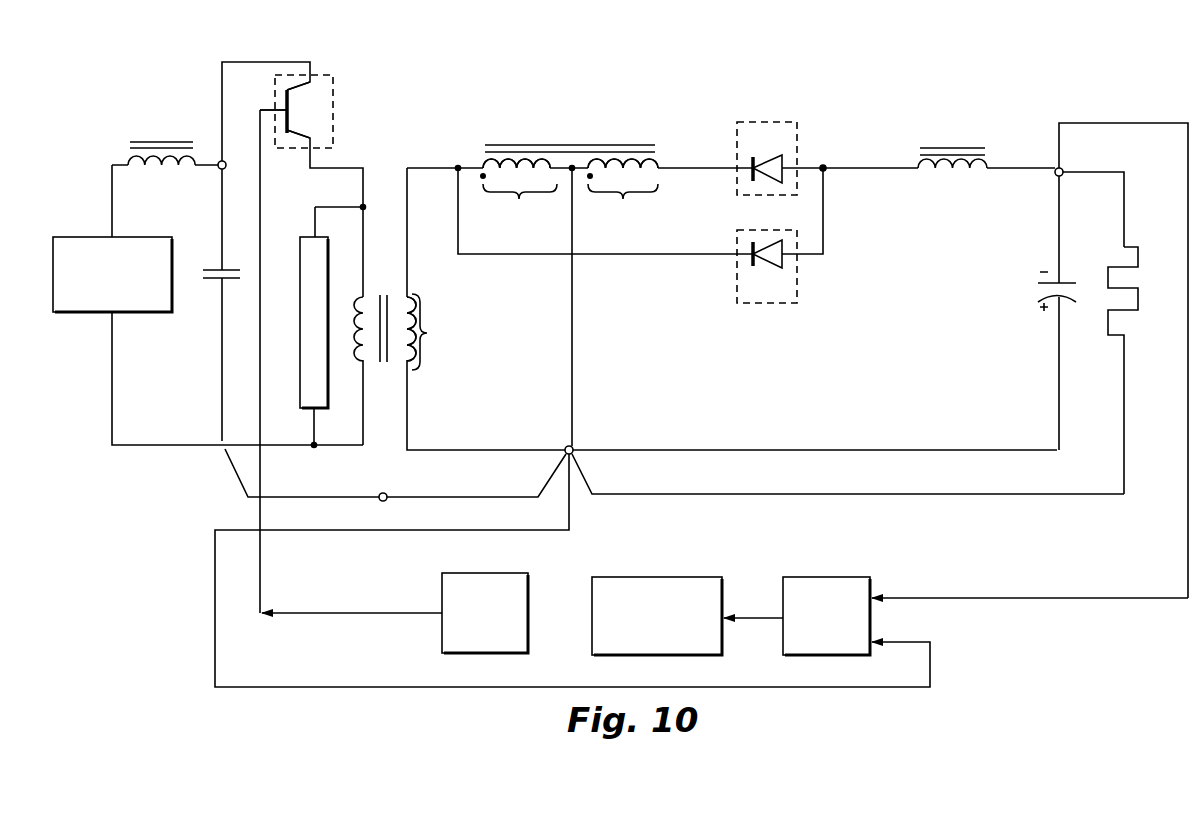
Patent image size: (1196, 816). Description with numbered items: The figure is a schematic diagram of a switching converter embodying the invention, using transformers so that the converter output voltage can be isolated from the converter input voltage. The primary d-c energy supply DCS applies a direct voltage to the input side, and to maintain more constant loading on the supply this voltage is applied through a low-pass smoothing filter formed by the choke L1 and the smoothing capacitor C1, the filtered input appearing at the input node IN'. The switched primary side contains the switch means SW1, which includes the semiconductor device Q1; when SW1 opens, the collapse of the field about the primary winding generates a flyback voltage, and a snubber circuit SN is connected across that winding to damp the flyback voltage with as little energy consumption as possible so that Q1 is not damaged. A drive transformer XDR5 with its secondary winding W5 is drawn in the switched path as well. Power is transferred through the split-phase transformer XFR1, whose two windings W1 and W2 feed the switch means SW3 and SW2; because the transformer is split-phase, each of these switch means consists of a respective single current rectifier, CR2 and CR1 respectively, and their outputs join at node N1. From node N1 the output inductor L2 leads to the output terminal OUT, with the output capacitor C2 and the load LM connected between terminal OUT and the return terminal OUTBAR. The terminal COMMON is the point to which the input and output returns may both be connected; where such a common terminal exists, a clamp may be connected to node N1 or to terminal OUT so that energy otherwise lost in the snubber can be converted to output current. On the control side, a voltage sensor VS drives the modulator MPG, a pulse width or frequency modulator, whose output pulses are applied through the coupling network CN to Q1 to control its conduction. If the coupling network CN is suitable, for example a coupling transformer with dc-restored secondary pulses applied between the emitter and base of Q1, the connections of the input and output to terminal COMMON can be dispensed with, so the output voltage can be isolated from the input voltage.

The choke L1 is at (161, 143).
The input node IN' is at (208, 177).
The switch means SW1 is at (325, 75).
The semiconductor device Q1 is at (288, 110).
The drive transformer XDR5 is at (363, 161).
The secondary winding of XDR5 W5 is at (432, 332).
The split-phase transformer XFR1 is at (557, 139).
The first winding W1 is at (519, 191).
The second winding W2 is at (623, 191).
The switch means SW3 is at (780, 122).
The current rectifier CR2 is at (767, 159).
The switch means SW2 is at (793, 303).
The current rectifier CR1 is at (767, 267).
The node N1 is at (824, 172).
The output inductor L2 is at (952, 147).
The terminal OUT is at (1061, 176).
The load LM is at (1138, 267).
The output capacitor C2 is at (1045, 291).
The smoothing capacitor C1 is at (209, 270).
The primary d-c energy supply DCS is at (140, 312).
The snubber circuit SN is at (326, 408).
The terminal OUTBAR is at (565, 446).
The terminal COMMON is at (385, 493).
The coupling network CN is at (502, 573).
The modulator MPG is at (684, 577).
The voltage sensor VS is at (851, 577).